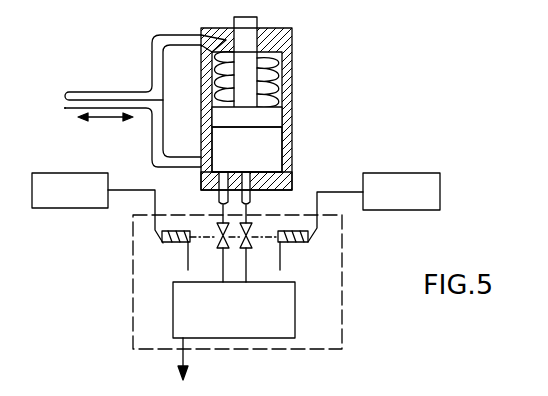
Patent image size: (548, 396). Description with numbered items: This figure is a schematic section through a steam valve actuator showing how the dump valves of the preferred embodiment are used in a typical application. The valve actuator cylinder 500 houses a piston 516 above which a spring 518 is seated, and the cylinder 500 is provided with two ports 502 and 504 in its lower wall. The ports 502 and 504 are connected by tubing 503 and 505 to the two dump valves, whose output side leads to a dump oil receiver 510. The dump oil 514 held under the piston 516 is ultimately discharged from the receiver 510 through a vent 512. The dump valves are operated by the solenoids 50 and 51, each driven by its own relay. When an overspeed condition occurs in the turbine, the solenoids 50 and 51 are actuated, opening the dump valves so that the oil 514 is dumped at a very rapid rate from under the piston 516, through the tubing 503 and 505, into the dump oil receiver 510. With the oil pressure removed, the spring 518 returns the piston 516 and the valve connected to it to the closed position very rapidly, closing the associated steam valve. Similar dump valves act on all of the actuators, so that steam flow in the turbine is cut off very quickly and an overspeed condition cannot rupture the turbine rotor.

The solenoid 50 is at (50, 173).
The solenoid 51 is at (430, 173).
The valve actuator cylinder 500 is at (292, 92).
The port 502 is at (209, 186).
The tubing 503 is at (222, 209).
The port 504 is at (287, 183).
The tubing 505 is at (247, 209).
The dump oil receiver 510 is at (295, 321).
The vent 512 is at (180, 360).
The dump oil 514 is at (277, 157).
The piston 516 is at (275, 120).
The spring 518 is at (279, 66).